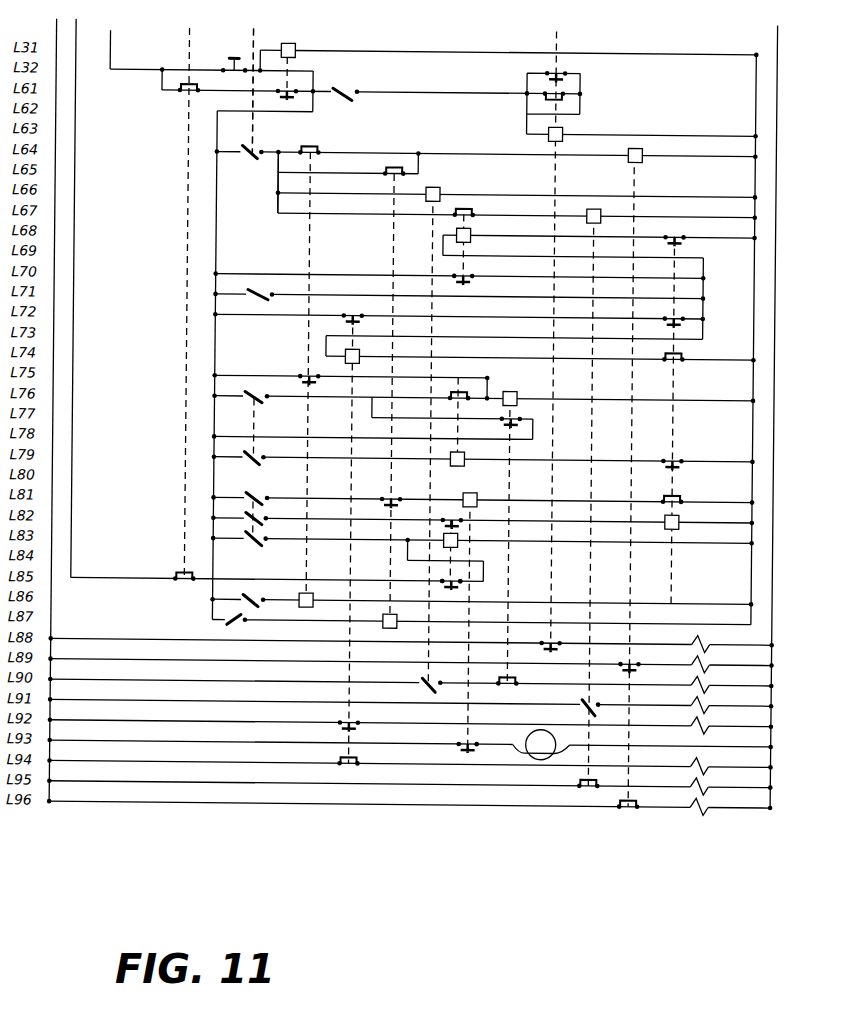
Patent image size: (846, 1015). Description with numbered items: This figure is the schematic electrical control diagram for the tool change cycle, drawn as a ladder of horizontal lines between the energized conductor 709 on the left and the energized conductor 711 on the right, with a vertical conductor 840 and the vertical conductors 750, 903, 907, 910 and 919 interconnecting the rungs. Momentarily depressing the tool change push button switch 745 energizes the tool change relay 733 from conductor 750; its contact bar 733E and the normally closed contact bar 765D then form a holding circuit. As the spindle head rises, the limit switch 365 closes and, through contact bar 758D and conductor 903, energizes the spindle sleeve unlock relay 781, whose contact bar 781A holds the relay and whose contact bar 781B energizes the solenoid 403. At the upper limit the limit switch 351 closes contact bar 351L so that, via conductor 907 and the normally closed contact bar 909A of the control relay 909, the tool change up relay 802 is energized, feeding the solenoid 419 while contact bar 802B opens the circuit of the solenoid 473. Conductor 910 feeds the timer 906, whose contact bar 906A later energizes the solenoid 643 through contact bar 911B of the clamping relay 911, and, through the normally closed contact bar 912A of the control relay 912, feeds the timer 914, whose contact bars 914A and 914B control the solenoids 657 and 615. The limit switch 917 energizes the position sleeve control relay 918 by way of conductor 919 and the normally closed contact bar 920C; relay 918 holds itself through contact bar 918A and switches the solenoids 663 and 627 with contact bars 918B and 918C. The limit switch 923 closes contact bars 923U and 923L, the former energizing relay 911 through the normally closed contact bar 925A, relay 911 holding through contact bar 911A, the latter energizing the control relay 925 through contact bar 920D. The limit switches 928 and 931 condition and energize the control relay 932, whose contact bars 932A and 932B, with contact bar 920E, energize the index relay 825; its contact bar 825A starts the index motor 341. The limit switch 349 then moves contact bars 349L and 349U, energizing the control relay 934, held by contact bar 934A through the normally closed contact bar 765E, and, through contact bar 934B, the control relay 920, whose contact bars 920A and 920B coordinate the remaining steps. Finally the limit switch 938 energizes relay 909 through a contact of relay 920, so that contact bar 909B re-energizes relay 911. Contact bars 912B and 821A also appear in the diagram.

The conductor 709 is at (53, 127).
The conductor 840 is at (72, 83).
The energized conductor 711 is at (753, 91).
The vertical conductor 907 is at (214, 255).
The energized conductor 750 is at (107, 44).
The vertical conductor 919 is at (702, 278).
The vertical conductor 903 is at (580, 93).
The tool change push button switch 745 is at (231, 60).
The tool change relay 733 is at (292, 45).
The normally closed contact bar 765D is at (184, 94).
The contact bar 733E is at (272, 98).
The limit switch 365 is at (346, 86).
The limit switch 351 is at (262, 143).
The contact bar 351L is at (249, 107).
The vertical conductor 910 is at (276, 200).
The normally closed contact bar 909A is at (316, 151).
The contact bar 932B is at (384, 178).
The timer 906 is at (438, 193).
The contact bar 758D is at (564, 81).
The contact bar 781A is at (545, 97).
The spindle sleeve unlock relay 781 is at (546, 137).
The tool change up relay 802 is at (641, 162).
The timer 914 is at (595, 190).
The normally closed contact bar 912A is at (471, 214).
The control relay 912 is at (470, 236).
The relay contact 912B is at (467, 284).
The contact bar 920A is at (682, 246).
The limit switch 917 is at (260, 286).
The contact bar 918A is at (352, 314).
The contact bar 920B is at (688, 318).
The position sleeve control relay 918 is at (357, 357).
The normally closed contact bar 920C is at (680, 361).
The contact bar 909B is at (300, 376).
The contact bar 923U is at (246, 389).
The normally closed contact bar 925A is at (450, 396).
The clamping relay 911 is at (511, 391).
The limit switch 923 is at (262, 432).
The contact bar 923L is at (258, 460).
The contact bar 911A is at (511, 428).
The control relay 925 is at (458, 466).
The contact bar 920D is at (680, 471).
The limit switch 928 is at (262, 496).
The contact bar 932A is at (385, 505).
The index relay 825 is at (471, 493).
The contact bar 920E is at (682, 503).
The contact bar 349U is at (268, 508).
The contact bar 934B is at (450, 519).
The control relay 920 is at (681, 520).
The limit switch 349 is at (240, 535).
The contact bar 349L is at (258, 544).
The control relay 934 is at (464, 544).
The normally closed contact bar 765E is at (176, 578).
The limit switch 938 is at (258, 593).
The contact bar 934A is at (444, 582).
The control relay 909 is at (308, 608).
The limit switch 931 is at (239, 631).
The control relay 932 is at (388, 628).
The contact bar 781B is at (545, 642).
The relay contact 821A is at (625, 663).
The contact bar 906A is at (424, 683).
The contact bar 911B is at (505, 688).
The contact bar 914A is at (585, 705).
The contact bar 918B is at (342, 722).
The contact bar 825A is at (462, 753).
The index motor 341 is at (540, 755).
The contact bar 918C is at (345, 766).
The contact bar 914B is at (583, 787).
The contact bar 802B is at (640, 818).
The solenoid 403 is at (703, 634).
The solenoid 419 is at (703, 654).
The solenoid 643 is at (703, 674).
The solenoid 657 is at (703, 695).
The solenoid 627 is at (703, 715).
The solenoid 663 is at (703, 756).
The solenoid 615 is at (703, 776).
The solenoid 473 is at (708, 812).